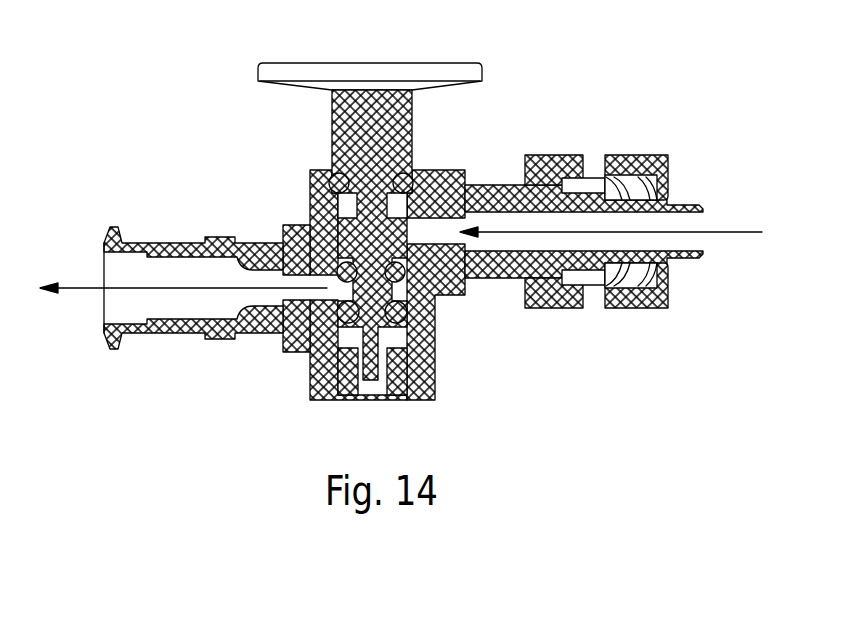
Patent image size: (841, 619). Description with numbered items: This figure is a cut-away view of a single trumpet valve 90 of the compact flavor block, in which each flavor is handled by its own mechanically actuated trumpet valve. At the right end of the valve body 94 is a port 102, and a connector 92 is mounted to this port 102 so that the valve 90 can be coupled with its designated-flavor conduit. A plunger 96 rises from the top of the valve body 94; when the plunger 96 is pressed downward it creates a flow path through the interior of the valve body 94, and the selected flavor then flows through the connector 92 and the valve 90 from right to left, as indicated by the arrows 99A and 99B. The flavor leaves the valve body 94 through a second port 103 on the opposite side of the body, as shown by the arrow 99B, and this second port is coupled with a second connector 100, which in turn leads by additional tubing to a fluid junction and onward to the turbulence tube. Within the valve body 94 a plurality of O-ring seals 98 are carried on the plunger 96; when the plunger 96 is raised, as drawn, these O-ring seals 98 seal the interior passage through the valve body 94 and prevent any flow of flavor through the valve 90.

The trumpet valve 90 is at (244, 164).
The connector 92 is at (540, 298).
The valve body 94 is at (427, 338).
The plunger 96 is at (370, 78).
The O-ring seals 98 is at (328, 168).
The arrow 99A is at (737, 233).
The arrow 99B is at (83, 288).
The second connector 100 is at (152, 330).
The port 102 is at (424, 226).
The second port 103 is at (333, 287).